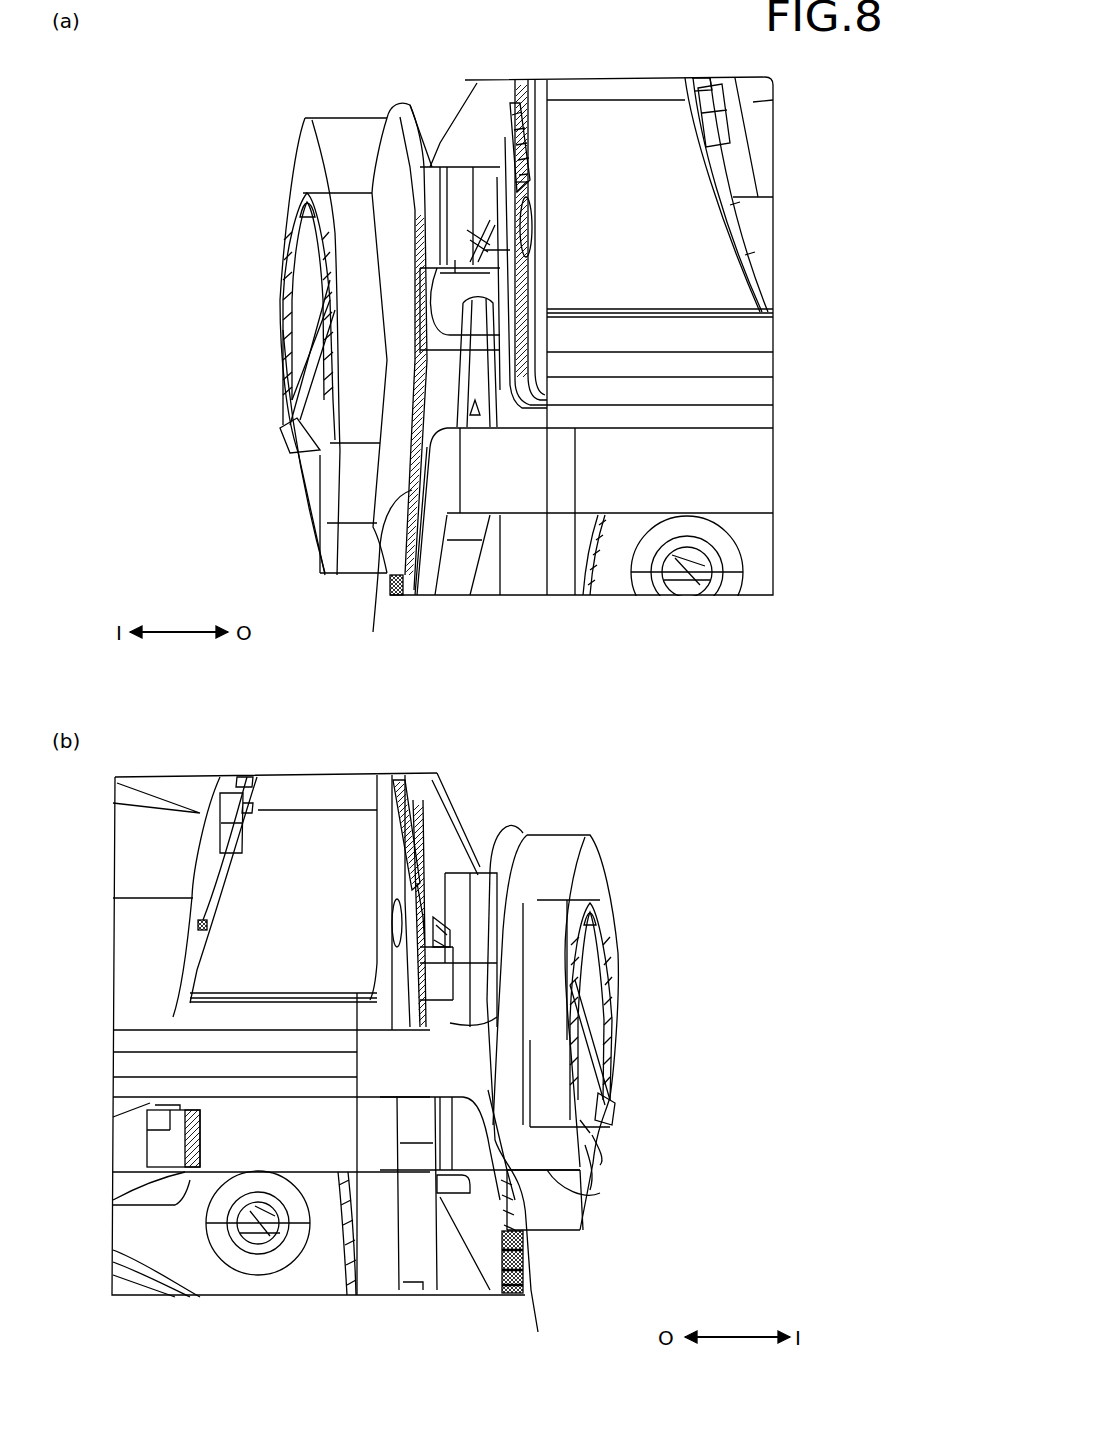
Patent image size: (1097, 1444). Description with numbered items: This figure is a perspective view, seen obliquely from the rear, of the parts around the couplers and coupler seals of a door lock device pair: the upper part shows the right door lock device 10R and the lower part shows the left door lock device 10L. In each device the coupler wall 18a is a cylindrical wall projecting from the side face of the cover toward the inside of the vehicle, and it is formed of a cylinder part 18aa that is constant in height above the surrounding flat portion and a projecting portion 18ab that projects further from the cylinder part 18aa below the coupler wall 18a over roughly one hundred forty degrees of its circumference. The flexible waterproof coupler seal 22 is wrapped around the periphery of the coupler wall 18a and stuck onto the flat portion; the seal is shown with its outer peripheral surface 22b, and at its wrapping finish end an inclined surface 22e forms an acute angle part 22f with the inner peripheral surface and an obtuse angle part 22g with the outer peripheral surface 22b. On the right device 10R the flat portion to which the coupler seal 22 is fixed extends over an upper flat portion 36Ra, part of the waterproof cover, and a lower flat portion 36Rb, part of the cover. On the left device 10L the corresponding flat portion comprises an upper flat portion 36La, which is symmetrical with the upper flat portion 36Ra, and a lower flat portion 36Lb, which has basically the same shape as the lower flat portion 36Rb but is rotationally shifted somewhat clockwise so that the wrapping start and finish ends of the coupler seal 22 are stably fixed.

The right door lock device 10R is at (237, 78).
The left door lock device 10L is at (676, 795).
The coupler seal 22 is at (326, 130).
The outer peripheral surface 22b is at (333, 346).
The acute angle part 22f is at (592, 1140).
The inclined surface 22e is at (592, 1162).
The obtuse angle part 22g is at (590, 1195).
The coupler wall 18a is at (180, 285).
The cylinder part 18aa is at (292, 300).
The projecting portion 18ab is at (310, 418).
The upper flat portion 36Ra is at (392, 105).
The lower flat portion 36Rb is at (376, 622).
The upper flat portion 36La is at (520, 832).
The lower flat portion 36Lb is at (538, 1332).